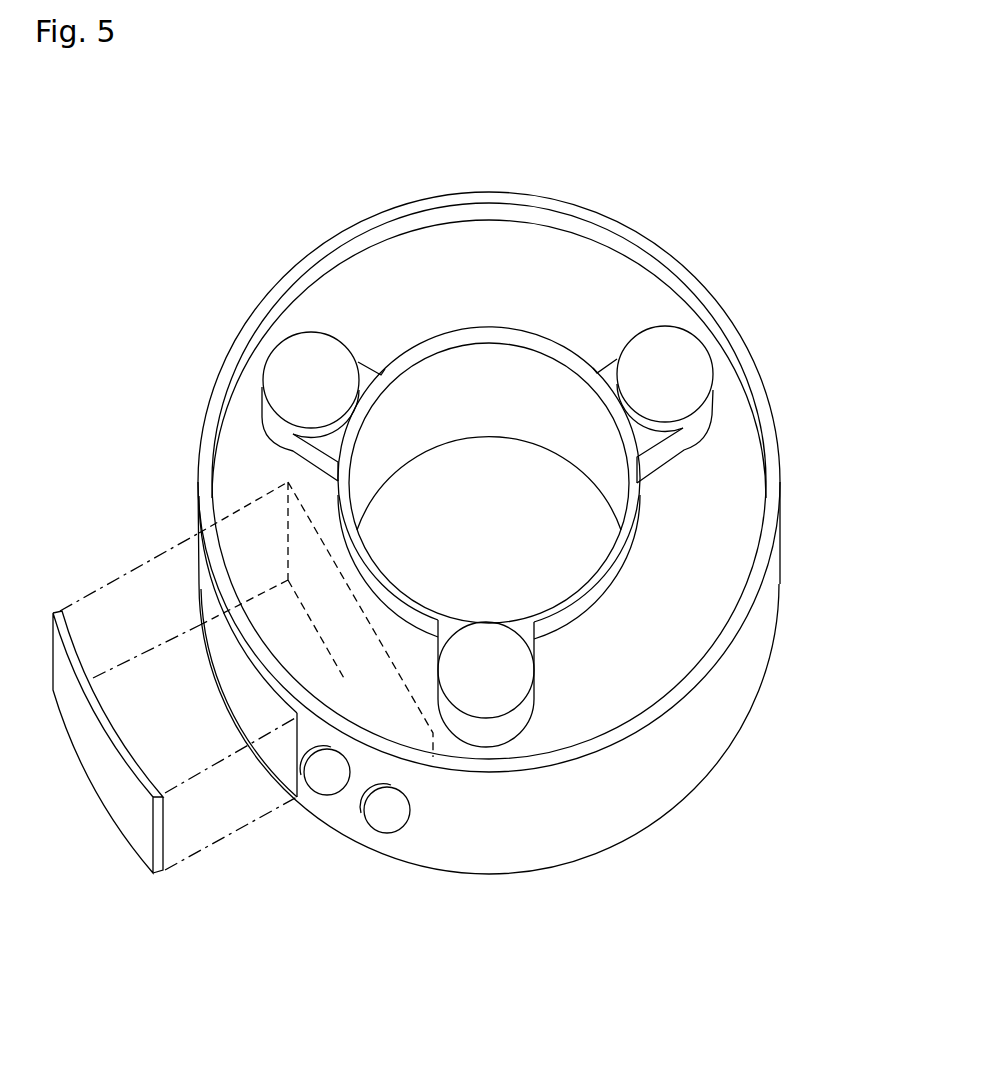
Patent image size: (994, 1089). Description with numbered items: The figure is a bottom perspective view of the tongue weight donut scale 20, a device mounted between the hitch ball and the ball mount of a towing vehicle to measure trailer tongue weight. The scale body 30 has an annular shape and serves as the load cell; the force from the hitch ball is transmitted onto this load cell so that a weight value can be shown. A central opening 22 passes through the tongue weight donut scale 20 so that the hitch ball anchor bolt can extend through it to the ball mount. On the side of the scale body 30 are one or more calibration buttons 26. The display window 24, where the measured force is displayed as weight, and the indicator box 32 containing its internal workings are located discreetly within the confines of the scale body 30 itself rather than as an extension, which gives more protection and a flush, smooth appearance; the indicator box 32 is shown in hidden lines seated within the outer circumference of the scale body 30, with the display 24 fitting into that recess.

The tongue weight donut scale 20 is at (682, 153).
The opening 22 is at (489, 483).
The display window 24 is at (110, 773).
The calibration buttons 26 is at (327, 772).
The scale body 30 is at (650, 770).
The indicator box 32 is at (295, 640).